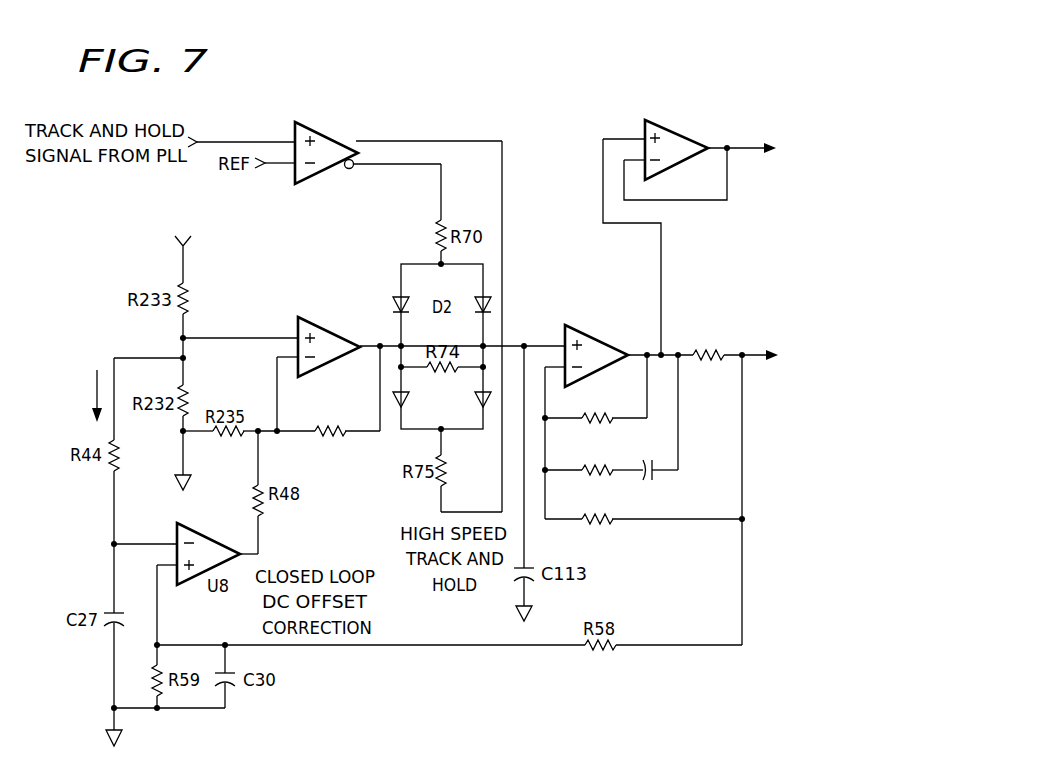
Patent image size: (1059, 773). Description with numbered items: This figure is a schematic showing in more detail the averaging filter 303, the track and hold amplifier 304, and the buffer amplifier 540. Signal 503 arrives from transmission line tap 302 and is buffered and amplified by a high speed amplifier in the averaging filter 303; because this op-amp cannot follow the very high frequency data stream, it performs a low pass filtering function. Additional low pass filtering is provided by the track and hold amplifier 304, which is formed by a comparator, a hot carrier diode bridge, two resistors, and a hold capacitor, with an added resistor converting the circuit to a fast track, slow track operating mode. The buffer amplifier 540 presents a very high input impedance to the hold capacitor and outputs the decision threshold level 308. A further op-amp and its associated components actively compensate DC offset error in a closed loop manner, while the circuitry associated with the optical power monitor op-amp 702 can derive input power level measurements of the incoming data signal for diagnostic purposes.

The transmission line tap 302 is at (183, 267).
The averaging filter 303 is at (368, 246).
The track and hold amplifier 304 is at (421, 65).
The decision threshold level 308 is at (748, 352).
The signal 503 is at (95, 394).
The buffer amplifier 540 is at (597, 335).
The op-amp U3 circuitry 702 is at (676, 128).